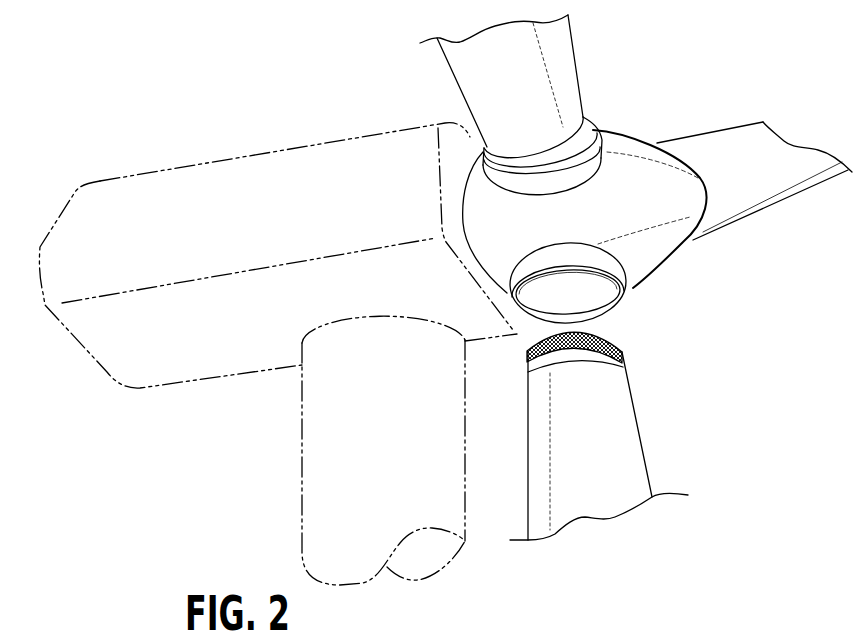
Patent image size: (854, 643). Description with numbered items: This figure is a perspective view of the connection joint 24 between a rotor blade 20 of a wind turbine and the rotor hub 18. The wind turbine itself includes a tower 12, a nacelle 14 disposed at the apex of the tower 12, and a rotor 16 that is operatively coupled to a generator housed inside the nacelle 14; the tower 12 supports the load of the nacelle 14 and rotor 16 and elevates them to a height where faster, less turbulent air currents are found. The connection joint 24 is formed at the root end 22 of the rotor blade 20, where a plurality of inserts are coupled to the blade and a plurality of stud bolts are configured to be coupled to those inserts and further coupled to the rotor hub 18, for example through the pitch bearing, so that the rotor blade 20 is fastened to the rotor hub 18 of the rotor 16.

The tower 12 is at (302, 443).
The nacelle 14 is at (158, 172).
The rotor 16 is at (642, 133).
The rotor hub 18 is at (613, 218).
The rotor blade 20 is at (568, 47).
The root end 22 is at (588, 121).
The connection joint 24 is at (626, 317).